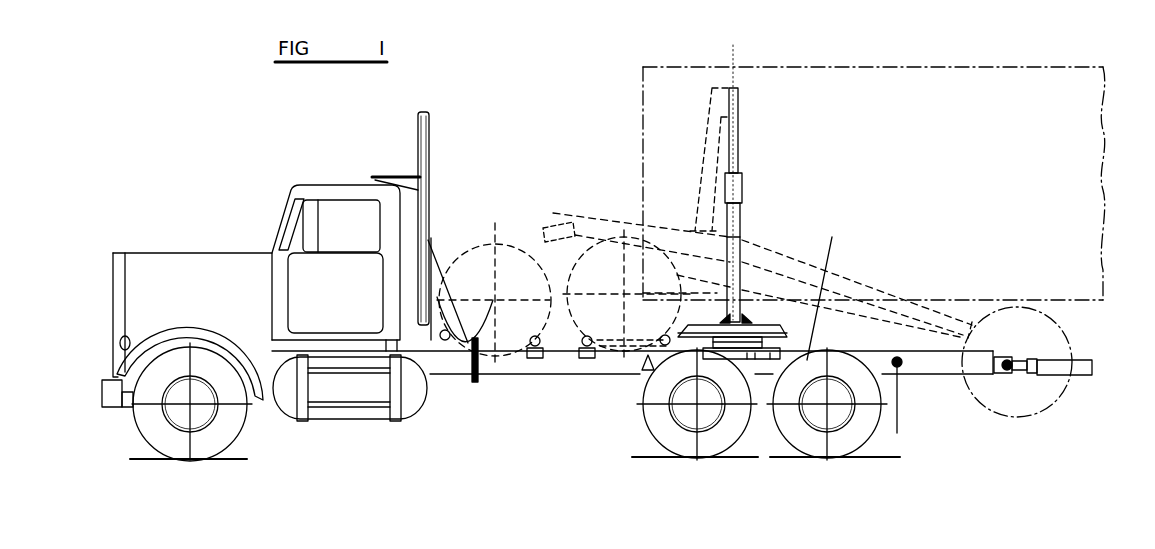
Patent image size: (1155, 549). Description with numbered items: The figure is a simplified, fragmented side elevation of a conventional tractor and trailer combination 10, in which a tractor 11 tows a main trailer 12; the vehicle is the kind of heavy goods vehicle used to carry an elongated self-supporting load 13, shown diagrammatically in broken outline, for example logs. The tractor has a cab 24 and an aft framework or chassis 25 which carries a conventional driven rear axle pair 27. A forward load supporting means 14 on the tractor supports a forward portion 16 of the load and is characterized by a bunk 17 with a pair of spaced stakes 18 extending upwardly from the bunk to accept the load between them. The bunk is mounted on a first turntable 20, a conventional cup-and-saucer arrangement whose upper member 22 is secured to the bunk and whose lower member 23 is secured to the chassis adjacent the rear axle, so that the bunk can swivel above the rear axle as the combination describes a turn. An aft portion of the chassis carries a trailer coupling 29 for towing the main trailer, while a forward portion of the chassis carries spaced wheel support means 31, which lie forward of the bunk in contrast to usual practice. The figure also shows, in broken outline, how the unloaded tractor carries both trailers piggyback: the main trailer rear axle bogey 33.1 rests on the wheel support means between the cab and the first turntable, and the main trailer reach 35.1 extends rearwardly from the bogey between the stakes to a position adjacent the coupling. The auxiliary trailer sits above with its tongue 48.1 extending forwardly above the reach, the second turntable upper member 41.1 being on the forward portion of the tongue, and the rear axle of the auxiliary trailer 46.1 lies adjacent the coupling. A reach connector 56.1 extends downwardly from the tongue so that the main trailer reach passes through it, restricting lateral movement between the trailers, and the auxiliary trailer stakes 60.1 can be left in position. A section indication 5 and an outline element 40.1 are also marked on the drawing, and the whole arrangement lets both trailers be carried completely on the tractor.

The section line 5- 5 is at (868, 259).
The tractor and trailer combination 10 is at (730, 52).
The tractor 11 is at (186, 218).
The trailer 12 is at (1088, 392).
The load 13 is at (638, 88).
The forward load supporting means 14 is at (753, 186).
The forward portion of the load 16 is at (640, 140).
The bunk 17 is at (752, 318).
The stakes 18 is at (742, 226).
The first turntable 20 is at (691, 342).
The upper member 22 is at (760, 326).
The lower member 23 is at (760, 350).
The cab 24 is at (316, 186).
The chassis 25 is at (523, 376).
The rear axle pair 27 is at (840, 463).
The trailer coupling 29 is at (1003, 370).
The wheel support means 31 is at (664, 334).
The main trailer rear axle bogey 33.1 is at (463, 253).
The main trailer reach 35.1 is at (887, 292).
The hydraulic cylinder 40.1 is at (561, 215).
The second turntable upper member 41.1 is at (547, 224).
The rear axle of the auxiliary trailer 46.1 is at (1047, 313).
The auxiliary trailer tongue 48.1 is at (790, 258).
The reach connector 56.1 is at (873, 330).
The stakes 60.1 is at (710, 137).